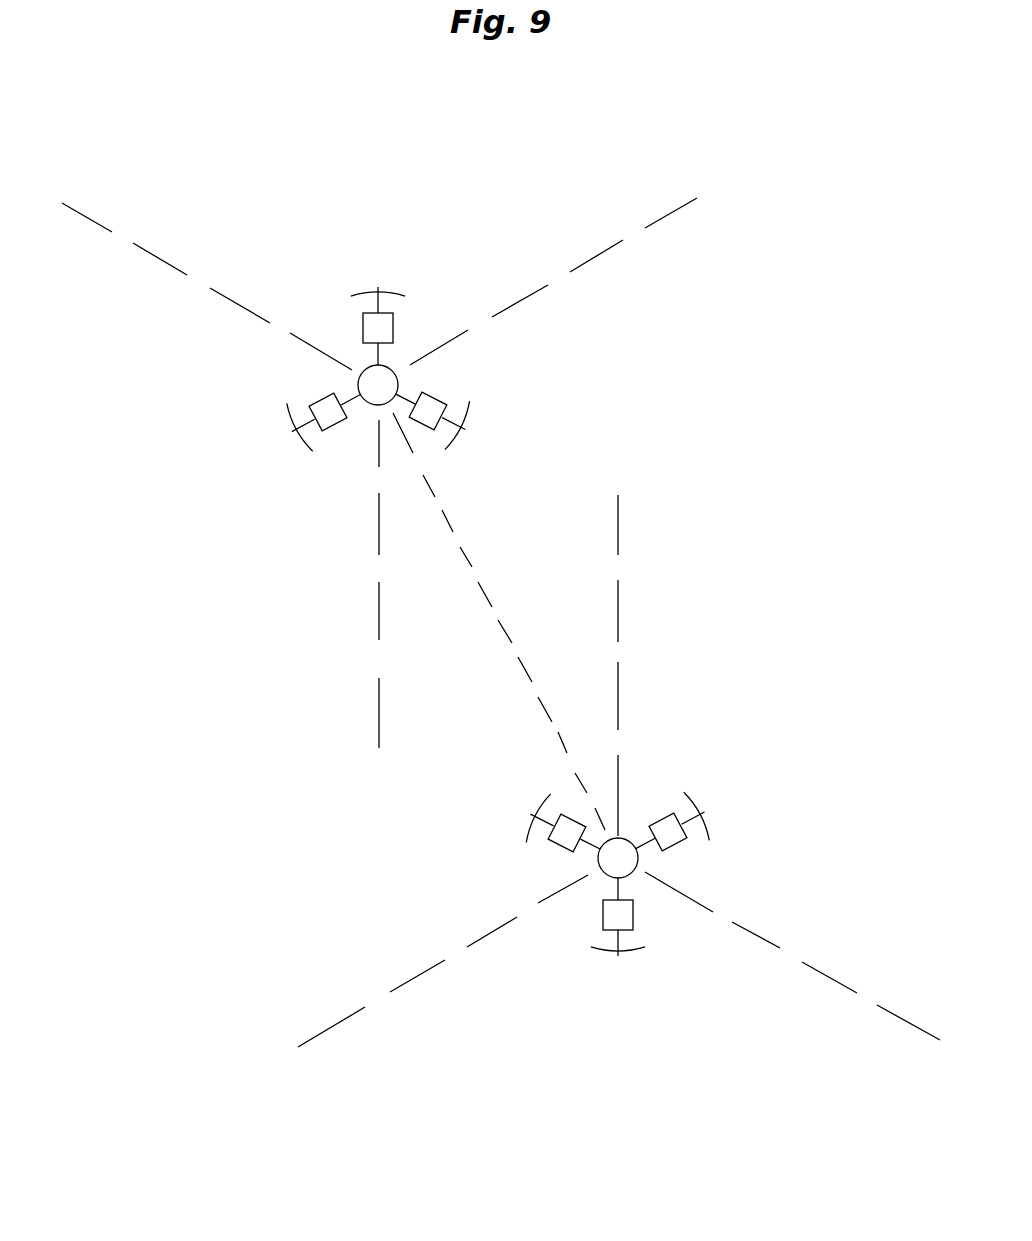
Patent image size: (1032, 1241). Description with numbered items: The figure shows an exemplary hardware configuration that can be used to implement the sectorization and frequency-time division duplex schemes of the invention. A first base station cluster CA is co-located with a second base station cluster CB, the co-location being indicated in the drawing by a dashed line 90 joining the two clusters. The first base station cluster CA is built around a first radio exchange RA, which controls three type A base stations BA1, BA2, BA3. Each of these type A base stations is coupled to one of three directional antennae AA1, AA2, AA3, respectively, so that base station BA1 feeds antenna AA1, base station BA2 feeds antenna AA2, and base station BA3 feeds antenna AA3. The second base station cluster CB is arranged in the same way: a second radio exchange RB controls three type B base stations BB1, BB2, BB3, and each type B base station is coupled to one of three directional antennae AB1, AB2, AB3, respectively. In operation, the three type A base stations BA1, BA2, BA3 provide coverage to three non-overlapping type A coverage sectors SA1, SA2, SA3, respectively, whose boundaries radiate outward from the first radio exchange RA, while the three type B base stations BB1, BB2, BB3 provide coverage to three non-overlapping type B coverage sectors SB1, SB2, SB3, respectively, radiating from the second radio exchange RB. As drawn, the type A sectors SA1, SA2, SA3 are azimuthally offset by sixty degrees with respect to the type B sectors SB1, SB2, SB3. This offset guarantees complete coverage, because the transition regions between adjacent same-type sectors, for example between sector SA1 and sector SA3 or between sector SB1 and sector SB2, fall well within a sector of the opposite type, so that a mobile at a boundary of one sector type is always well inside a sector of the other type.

The first base station cluster CA is at (386, 203).
The second base station cluster CB is at (628, 1071).
The first radio exchange RA is at (393, 367).
The second radio exchange RB is at (643, 867).
The directional antenna AA1 is at (372, 282).
The directional antenna AA2 is at (472, 417).
The directional antenna AA3 is at (285, 428).
The directional antenna AB1 is at (703, 797).
The directional antenna AB2 is at (628, 958).
The directional antenna AB3 is at (523, 828).
The type A base station BA1 is at (360, 335).
The type A base station BA2 is at (437, 387).
The type A base station BA3 is at (318, 393).
The type B base station BB1 is at (652, 815).
The type B base station BB2 is at (637, 905).
The type B base station BB3 is at (558, 853).
The type A coverage sector SA1 is at (332, 284).
The type A coverage sector SA2 is at (552, 450).
The type A coverage sector SA3 is at (233, 501).
The type B coverage sector SB1 is at (760, 736).
The type B coverage sector SB2 is at (665, 956).
The type B coverage sector SB3 is at (444, 786).
The dashed line 90 is at (453, 558).